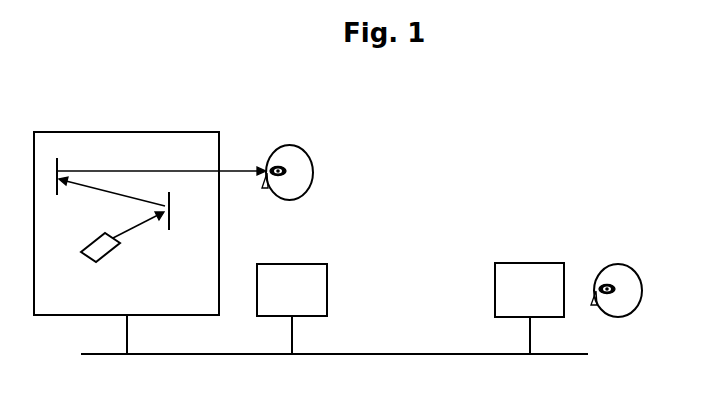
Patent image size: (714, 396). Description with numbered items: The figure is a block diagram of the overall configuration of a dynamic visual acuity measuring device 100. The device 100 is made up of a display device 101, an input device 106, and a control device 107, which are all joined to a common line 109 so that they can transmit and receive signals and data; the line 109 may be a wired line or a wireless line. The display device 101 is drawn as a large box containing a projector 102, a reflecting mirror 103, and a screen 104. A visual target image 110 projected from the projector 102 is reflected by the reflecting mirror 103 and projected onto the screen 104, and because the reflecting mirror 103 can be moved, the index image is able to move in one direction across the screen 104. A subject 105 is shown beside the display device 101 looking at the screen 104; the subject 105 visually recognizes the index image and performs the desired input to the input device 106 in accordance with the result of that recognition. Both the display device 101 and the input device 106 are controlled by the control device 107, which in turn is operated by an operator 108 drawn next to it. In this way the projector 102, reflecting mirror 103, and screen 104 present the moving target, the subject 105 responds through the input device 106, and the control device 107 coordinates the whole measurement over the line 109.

The dynamic visual acuity measuring device 100 is at (420, 173).
The display device 101 is at (153, 142).
The projector 102 is at (102, 247).
The reflecting mirror 103 is at (165, 233).
The screen 104 is at (62, 163).
The subject 105 is at (292, 158).
The input device 106 is at (299, 272).
The control device 107 is at (537, 272).
The operator 108 is at (613, 272).
The line 109 is at (377, 353).
The visual target image 110 is at (95, 193).